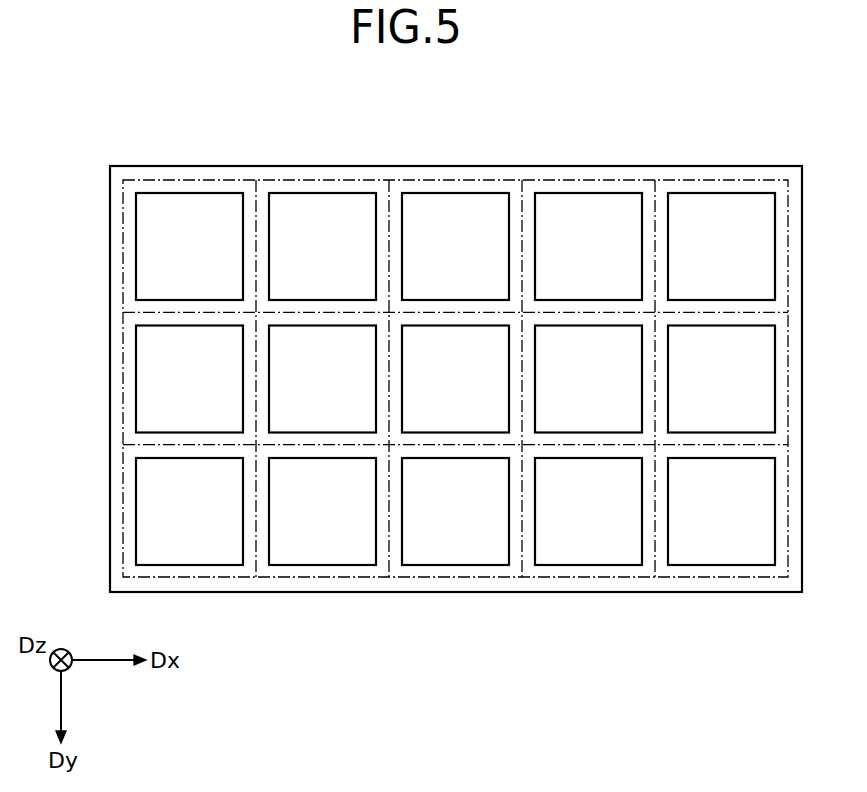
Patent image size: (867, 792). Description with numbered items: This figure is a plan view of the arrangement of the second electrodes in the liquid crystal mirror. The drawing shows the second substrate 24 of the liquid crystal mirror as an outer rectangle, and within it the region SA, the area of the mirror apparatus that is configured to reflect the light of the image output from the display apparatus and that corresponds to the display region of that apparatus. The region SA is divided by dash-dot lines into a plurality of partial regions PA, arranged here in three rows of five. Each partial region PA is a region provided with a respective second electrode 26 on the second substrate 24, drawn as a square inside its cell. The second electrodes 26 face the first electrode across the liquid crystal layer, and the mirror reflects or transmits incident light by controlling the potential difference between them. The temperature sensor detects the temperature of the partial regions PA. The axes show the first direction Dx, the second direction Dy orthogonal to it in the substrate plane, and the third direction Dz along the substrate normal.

The second substrate 24 is at (717, 167).
The second electrodes 26 is at (188, 193).
The partial regions PA is at (321, 180).
The region SA is at (585, 180).